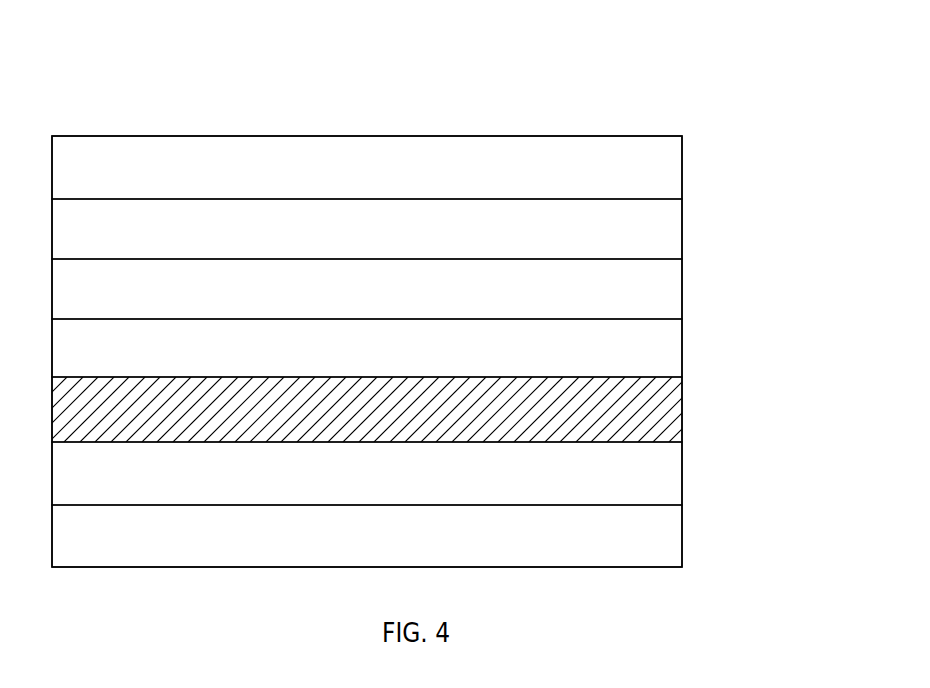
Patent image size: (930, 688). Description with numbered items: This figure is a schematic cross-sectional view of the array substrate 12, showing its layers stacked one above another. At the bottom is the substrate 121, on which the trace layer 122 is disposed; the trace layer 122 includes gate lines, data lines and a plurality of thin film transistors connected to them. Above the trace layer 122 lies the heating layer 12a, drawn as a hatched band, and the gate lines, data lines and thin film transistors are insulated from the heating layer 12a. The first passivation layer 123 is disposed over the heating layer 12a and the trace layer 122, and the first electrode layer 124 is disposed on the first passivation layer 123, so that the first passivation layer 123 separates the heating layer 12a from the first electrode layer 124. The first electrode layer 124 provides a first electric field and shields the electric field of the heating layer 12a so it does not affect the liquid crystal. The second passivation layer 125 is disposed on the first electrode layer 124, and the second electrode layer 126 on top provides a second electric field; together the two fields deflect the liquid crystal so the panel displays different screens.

The array substrate 12 is at (392, 89).
The substrate 121 is at (668, 537).
The trace layer 122 is at (668, 463).
The heating layer 12a is at (680, 408).
The first passivation layer 123 is at (672, 353).
The first electrode layer 124 is at (672, 287).
The second passivation layer 125 is at (672, 228).
The second electrode layer 126 is at (670, 167).